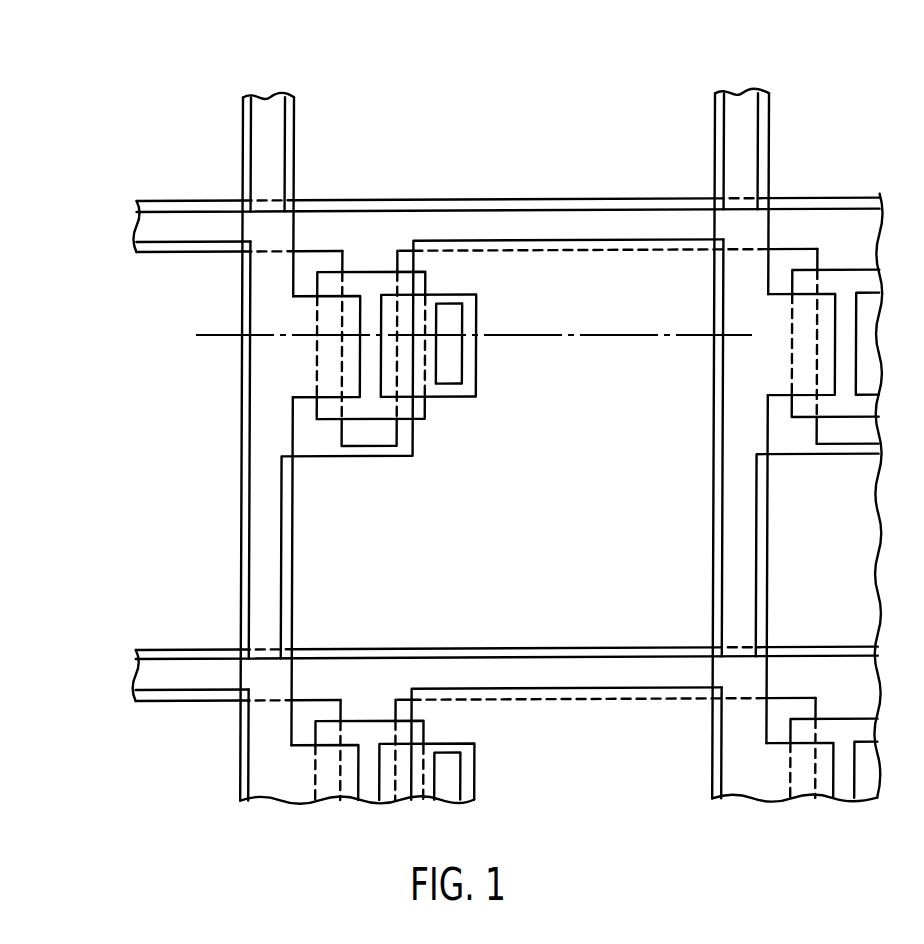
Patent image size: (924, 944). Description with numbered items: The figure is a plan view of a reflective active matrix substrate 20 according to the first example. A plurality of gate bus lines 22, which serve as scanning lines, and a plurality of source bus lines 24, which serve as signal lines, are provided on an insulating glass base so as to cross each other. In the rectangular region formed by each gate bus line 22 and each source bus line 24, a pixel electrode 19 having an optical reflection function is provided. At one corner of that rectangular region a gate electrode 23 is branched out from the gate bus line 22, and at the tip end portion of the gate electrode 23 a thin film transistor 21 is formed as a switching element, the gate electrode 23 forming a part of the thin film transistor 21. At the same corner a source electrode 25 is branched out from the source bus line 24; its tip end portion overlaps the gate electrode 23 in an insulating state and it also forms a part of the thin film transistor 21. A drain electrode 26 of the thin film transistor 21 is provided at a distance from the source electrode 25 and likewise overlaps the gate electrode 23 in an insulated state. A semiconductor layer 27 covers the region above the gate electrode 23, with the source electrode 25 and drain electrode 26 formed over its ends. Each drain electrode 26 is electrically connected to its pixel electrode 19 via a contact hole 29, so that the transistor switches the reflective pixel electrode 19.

The pixel electrode 19 is at (579, 520).
The reflective active matrix substrate 20 is at (463, 428).
The thin film transistor 21 is at (385, 348).
The gate bus line 22 is at (506, 449).
The gate electrode 23 is at (326, 346).
The source bus line 24 is at (504, 445).
The source electrode 25 is at (371, 345).
The drain electrode 26 is at (428, 345).
The semiconductor layer 27 is at (370, 348).
The contact hole 29 is at (449, 344).